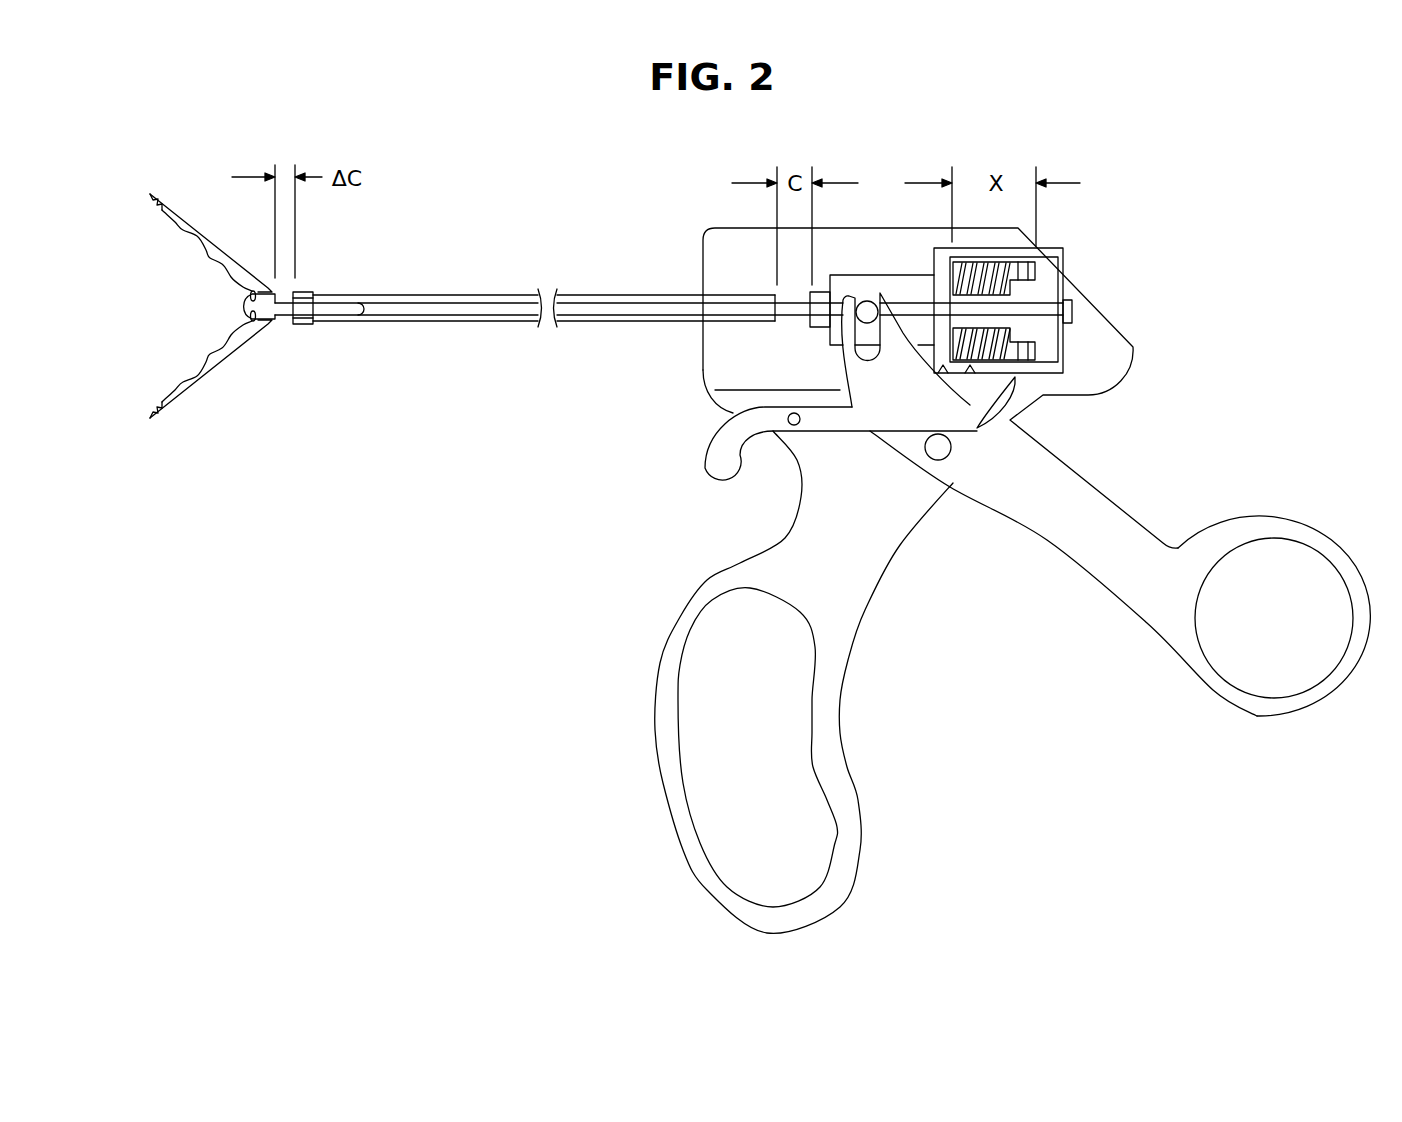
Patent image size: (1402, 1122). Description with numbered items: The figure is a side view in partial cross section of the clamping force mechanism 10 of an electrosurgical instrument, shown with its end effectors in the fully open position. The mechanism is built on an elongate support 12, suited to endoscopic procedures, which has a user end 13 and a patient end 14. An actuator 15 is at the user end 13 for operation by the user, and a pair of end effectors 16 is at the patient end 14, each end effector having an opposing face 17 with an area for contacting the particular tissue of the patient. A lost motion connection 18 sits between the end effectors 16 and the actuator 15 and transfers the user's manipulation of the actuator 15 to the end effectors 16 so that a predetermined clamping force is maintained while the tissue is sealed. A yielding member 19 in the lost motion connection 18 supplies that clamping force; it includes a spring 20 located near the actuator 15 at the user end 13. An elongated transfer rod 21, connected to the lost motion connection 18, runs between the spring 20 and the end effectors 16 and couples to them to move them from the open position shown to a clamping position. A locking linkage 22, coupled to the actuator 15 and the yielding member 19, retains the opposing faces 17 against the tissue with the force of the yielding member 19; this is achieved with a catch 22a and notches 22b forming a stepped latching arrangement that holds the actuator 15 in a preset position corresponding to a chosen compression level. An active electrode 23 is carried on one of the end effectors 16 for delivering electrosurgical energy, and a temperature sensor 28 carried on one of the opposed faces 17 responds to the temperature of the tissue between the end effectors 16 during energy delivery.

The clamping force mechanism 10 is at (478, 281).
The elongate support 12 is at (416, 293).
The user end 13 is at (1090, 297).
The patient end 14 is at (305, 324).
The actuator 15 is at (853, 845).
The pair of end effectors 16 is at (236, 306).
The opposing face 17 is at (172, 384).
The lost motion connection 18 is at (893, 285).
The yielding member 19 is at (1037, 352).
The spring 20 is at (1007, 276).
The elongated transfer rod 21 is at (633, 312).
The locking linkage 22 is at (707, 475).
The catch 22a is at (1017, 395).
The notches 22b is at (968, 374).
The active electrode 23 is at (190, 247).
The temperature sensor 28 is at (208, 258).